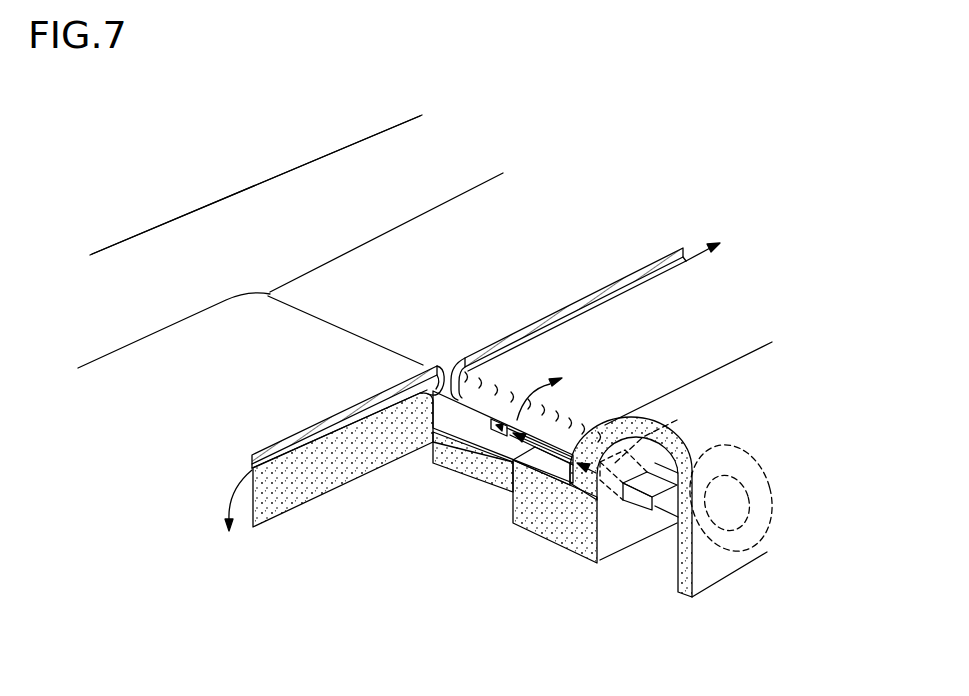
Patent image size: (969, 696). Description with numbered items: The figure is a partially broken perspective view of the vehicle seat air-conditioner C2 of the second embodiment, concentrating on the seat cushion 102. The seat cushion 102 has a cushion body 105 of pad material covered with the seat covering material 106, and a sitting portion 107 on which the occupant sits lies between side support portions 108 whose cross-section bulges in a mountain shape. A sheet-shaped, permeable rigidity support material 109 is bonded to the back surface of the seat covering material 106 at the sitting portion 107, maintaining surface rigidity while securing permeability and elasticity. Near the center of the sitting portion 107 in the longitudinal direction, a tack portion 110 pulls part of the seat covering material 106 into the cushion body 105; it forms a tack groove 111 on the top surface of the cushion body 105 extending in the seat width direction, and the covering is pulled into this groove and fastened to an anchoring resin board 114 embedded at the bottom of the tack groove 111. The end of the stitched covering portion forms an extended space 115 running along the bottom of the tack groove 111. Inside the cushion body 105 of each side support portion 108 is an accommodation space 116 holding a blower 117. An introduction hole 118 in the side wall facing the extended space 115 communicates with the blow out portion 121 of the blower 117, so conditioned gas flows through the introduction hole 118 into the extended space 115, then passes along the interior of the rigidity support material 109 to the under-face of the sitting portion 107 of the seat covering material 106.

The seat cushion 102 is at (139, 194).
The cushion body 105 is at (335, 470).
The seat covering material 106 is at (664, 257).
The sitting portion 107 is at (537, 228).
The side support portion 108 is at (333, 153).
The rigidity support material 109 is at (650, 278).
The tack portion 110 is at (327, 320).
The tack groove 111 is at (492, 434).
The anchoring resin board 114 is at (432, 436).
The extended space 115 is at (433, 402).
The accommodation space 116 is at (611, 533).
The blower 117 is at (767, 510).
The introduction hole 118 is at (677, 420).
The blow out portion 121 is at (627, 503).
The vehicle seat air-conditioner C2 is at (752, 172).